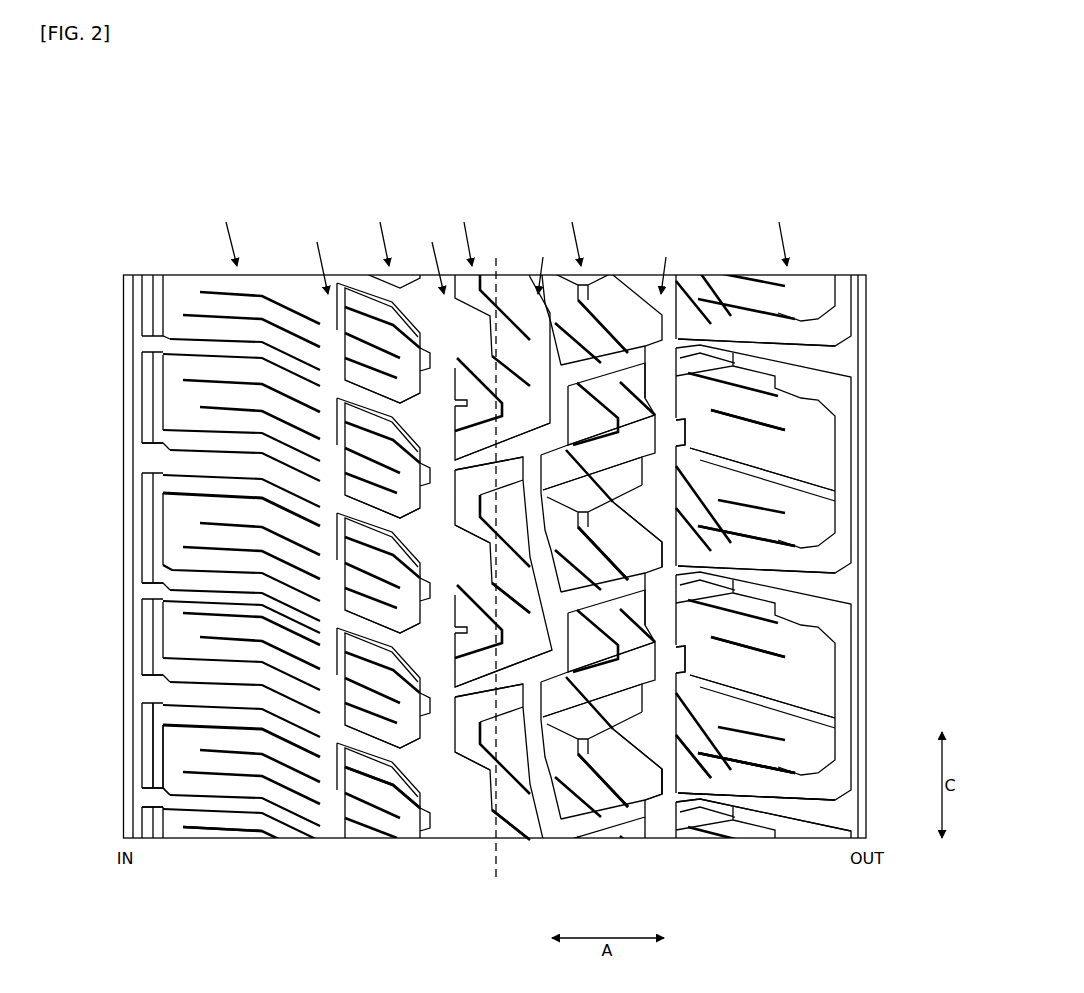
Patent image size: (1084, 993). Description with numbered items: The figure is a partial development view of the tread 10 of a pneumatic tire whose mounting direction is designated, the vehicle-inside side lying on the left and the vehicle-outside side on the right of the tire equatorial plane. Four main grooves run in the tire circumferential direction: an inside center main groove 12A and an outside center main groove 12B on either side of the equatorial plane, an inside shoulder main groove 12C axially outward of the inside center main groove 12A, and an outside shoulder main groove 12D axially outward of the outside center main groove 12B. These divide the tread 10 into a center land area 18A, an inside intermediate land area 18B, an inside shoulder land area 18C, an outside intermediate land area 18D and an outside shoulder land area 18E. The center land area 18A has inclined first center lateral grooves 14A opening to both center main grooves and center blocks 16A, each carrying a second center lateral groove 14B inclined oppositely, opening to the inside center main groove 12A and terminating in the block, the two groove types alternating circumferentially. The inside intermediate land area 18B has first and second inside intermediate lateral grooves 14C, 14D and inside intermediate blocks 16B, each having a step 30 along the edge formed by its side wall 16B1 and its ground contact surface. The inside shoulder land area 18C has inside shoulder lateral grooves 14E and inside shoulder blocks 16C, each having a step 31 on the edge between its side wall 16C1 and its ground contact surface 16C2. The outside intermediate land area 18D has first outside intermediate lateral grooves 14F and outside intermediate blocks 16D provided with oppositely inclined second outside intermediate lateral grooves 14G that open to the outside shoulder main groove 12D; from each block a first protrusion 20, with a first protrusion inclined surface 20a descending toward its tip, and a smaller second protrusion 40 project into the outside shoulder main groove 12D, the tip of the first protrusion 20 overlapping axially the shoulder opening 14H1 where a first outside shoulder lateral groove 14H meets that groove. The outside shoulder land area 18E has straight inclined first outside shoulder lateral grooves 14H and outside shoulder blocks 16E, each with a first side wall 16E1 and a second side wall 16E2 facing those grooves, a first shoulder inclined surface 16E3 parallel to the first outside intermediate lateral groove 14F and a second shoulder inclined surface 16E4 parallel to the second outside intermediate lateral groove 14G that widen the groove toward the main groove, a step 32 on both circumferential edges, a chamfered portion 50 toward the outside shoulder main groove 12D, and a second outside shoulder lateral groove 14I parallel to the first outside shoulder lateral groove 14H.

The tread 10 is at (482, 98).
The inside center main groove 12A is at (426, 528).
The outside center main groove 12B is at (540, 536).
The inside shoulder main groove 12C is at (311, 528).
The outside shoulder main groove 12D is at (668, 536).
The first center lateral groove 14A is at (507, 443).
The second center lateral groove 14B is at (473, 558).
The first inside intermediate lateral groove 14C is at (383, 408).
The second inside intermediate lateral groove 14D is at (395, 530).
The inside shoulder lateral groove 14E is at (223, 465).
The first outside intermediate lateral groove 14F is at (620, 593).
The second outside intermediate lateral groove 14G is at (615, 472).
The first outside shoulder lateral groove 14H is at (800, 352).
The shoulder opening 14H1 is at (662, 838).
The second outside shoulder lateral groove 14I is at (808, 468).
The center block 16A is at (511, 355).
The inside intermediate block 16B is at (390, 342).
The side wall 16B1 is at (385, 745).
The inside shoulder block 16C is at (220, 373).
The side wall 16C1 is at (257, 803).
The ground contact surface 16C2 is at (247, 785).
The outside intermediate block 16D is at (612, 383).
The outside shoulder block 16E is at (741, 370).
The first side wall 16E1 is at (755, 820).
The second side wall 16E2 is at (735, 790).
The first shoulder inclined surface 16E3 is at (706, 815).
The second shoulder inclined surface 16E4 is at (700, 775).
The center land area 18A is at (456, 232).
The inside intermediate land area 18B is at (372, 232).
The inside shoulder land area 18C is at (219, 232).
The outside intermediate land area 18D is at (565, 232).
The outside shoulder land area 18E is at (772, 232).
The first protrusion 20 is at (660, 533).
The first protrusion inclined surface 20a is at (658, 772).
The step 30 is at (384, 805).
The step 31 is at (290, 817).
The step 32 is at (767, 342).
The second protrusion 40 is at (655, 413).
The chamfered portion 50 is at (686, 432).